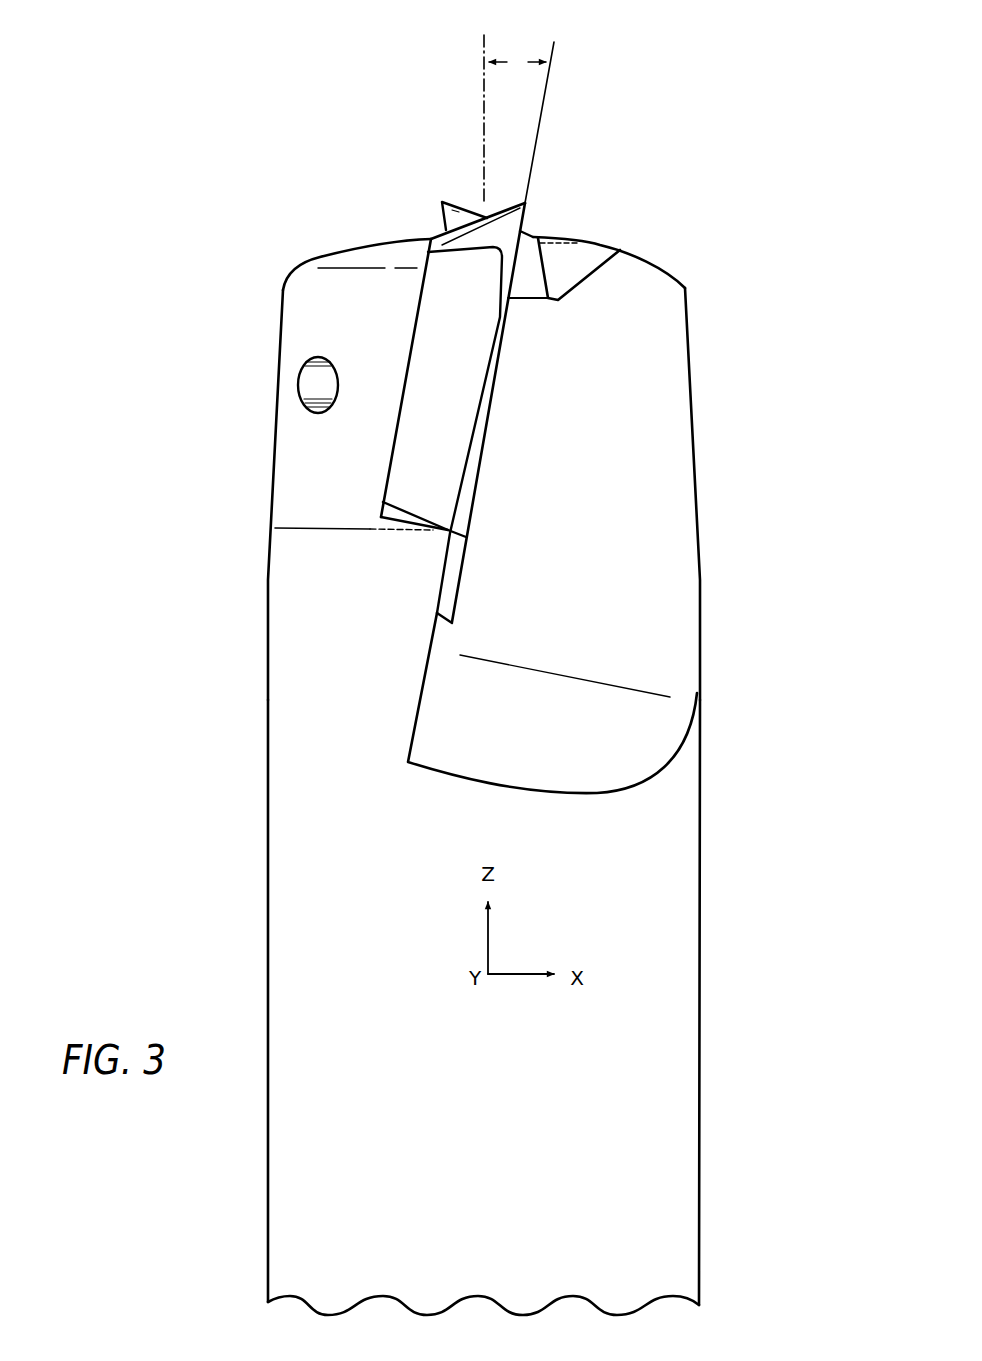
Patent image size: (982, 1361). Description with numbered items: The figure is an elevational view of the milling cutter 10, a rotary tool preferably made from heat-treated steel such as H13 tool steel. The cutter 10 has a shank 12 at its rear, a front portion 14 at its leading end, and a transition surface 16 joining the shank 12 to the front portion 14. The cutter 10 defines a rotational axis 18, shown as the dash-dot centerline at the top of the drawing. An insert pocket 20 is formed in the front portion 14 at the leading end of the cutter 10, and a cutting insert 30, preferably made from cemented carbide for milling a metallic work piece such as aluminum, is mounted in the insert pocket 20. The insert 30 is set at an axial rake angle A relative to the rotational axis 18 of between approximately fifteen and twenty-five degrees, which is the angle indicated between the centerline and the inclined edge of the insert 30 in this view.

The milling cutter 10 is at (142, 195).
The shank 12 is at (680, 1082).
The front portion 14 is at (274, 639).
The transition surface 16 is at (593, 730).
The rotational axis 18 is at (484, 104).
The insert pocket 20 is at (404, 317).
The cutting insert 30 is at (407, 470).